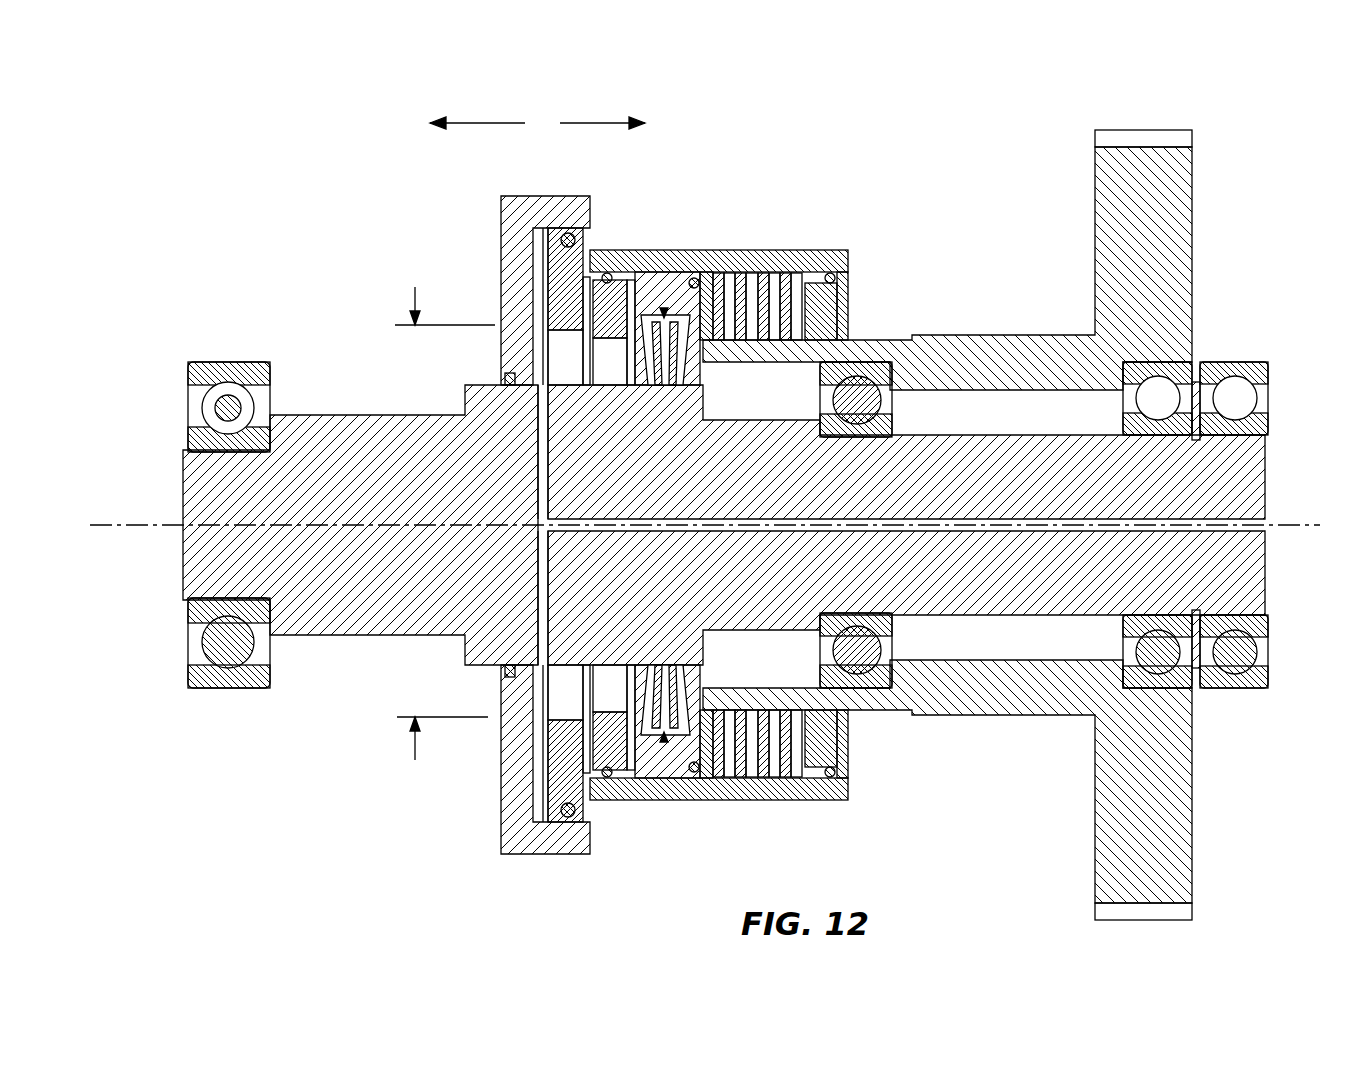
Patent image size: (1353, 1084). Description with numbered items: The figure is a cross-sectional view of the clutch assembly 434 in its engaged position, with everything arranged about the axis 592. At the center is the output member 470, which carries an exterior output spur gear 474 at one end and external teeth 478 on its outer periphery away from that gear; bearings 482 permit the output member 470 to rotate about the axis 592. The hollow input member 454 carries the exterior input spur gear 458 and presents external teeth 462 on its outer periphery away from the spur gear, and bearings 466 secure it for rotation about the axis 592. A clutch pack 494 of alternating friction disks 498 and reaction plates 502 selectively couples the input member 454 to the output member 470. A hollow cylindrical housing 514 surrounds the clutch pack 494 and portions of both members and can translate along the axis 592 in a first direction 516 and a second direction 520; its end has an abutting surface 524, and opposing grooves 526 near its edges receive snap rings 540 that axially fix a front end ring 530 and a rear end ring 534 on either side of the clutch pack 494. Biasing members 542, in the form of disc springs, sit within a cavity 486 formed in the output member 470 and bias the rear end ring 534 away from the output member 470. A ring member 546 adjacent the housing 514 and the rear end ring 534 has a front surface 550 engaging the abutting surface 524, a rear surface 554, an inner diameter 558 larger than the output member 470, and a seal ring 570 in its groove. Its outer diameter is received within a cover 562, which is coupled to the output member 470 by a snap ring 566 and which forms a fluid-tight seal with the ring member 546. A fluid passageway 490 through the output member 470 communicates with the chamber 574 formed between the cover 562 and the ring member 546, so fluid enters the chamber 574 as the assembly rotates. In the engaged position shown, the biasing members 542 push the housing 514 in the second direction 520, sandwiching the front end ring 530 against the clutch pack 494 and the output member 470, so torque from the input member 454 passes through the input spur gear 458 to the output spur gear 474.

The clutch assembly 434 is at (978, 118).
The input member 454 is at (1192, 270).
The input spur gear 458 is at (1142, 130).
The external teeth 462 is at (858, 345).
The bearings 466 is at (900, 640).
The output member 470 is at (183, 470).
The output spur gear 474 is at (372, 385).
The external teeth 478 is at (706, 290).
The bearings 482 is at (225, 690).
The cavity 486 is at (660, 318).
The fluid passageway 490 is at (541, 383).
The clutch pack 494 is at (790, 272).
The friction disks 498 is at (782, 792).
The reaction plates 502 is at (762, 792).
The housing 514 is at (740, 252).
The first direction 516 is at (602, 100).
The second direction 520 is at (477, 100).
The abutting surface 524 is at (598, 822).
The grooves 526 is at (610, 800).
The front end ring 530 is at (850, 730).
The rear end ring 534 is at (600, 750).
The snap rings 540 is at (608, 272).
The biasing members 542 is at (678, 740).
The ring member 546 is at (563, 778).
The front surface 550 is at (572, 232).
The rear surface 554 is at (577, 790).
The inner diameter 558 is at (444, 509).
The cover 562 is at (545, 196).
The snap ring 566 is at (503, 378).
The seal ring 570 is at (577, 820).
The chamber 574 is at (598, 732).
The axis 592 is at (163, 527).